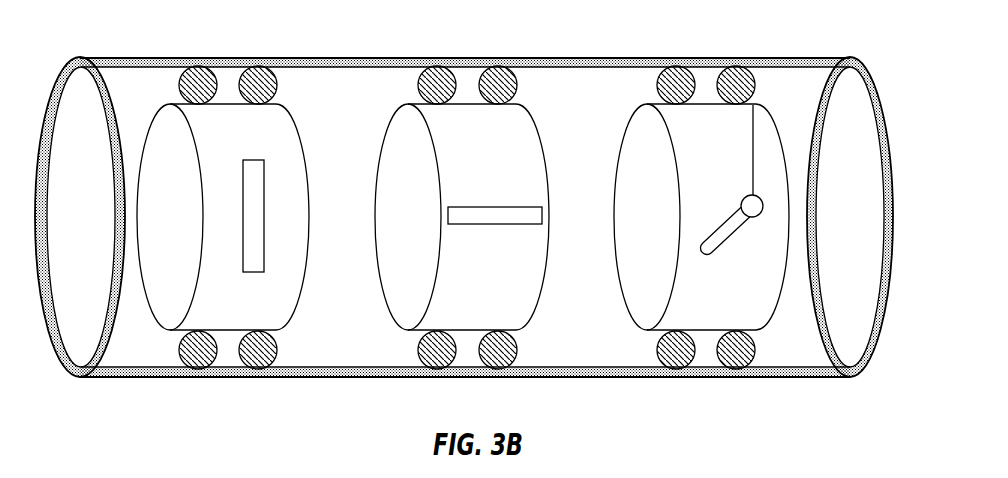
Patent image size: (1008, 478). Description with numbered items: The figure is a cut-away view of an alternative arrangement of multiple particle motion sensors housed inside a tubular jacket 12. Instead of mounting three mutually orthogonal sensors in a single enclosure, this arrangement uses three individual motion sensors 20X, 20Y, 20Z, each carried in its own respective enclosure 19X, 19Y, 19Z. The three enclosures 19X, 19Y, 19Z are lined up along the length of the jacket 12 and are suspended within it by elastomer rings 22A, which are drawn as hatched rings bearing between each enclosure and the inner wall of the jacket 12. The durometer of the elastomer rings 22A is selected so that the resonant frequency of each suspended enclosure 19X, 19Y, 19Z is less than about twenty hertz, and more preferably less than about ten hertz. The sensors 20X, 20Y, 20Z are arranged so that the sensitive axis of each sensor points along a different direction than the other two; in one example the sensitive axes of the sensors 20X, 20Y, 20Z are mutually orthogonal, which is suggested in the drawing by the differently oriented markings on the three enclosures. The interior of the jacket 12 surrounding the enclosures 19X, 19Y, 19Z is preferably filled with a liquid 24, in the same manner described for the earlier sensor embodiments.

The jacket 12 is at (143, 58).
The elastomer rings 22A is at (199, 80).
The enclosure 19Z is at (169, 318).
The enclosure 19Y is at (409, 318).
The enclosure 19X is at (645, 318).
The motion sensor 20Z is at (265, 170).
The motion sensor 20Y is at (544, 168).
The motion sensor 20X is at (754, 106).
The liquid 24 is at (797, 352).